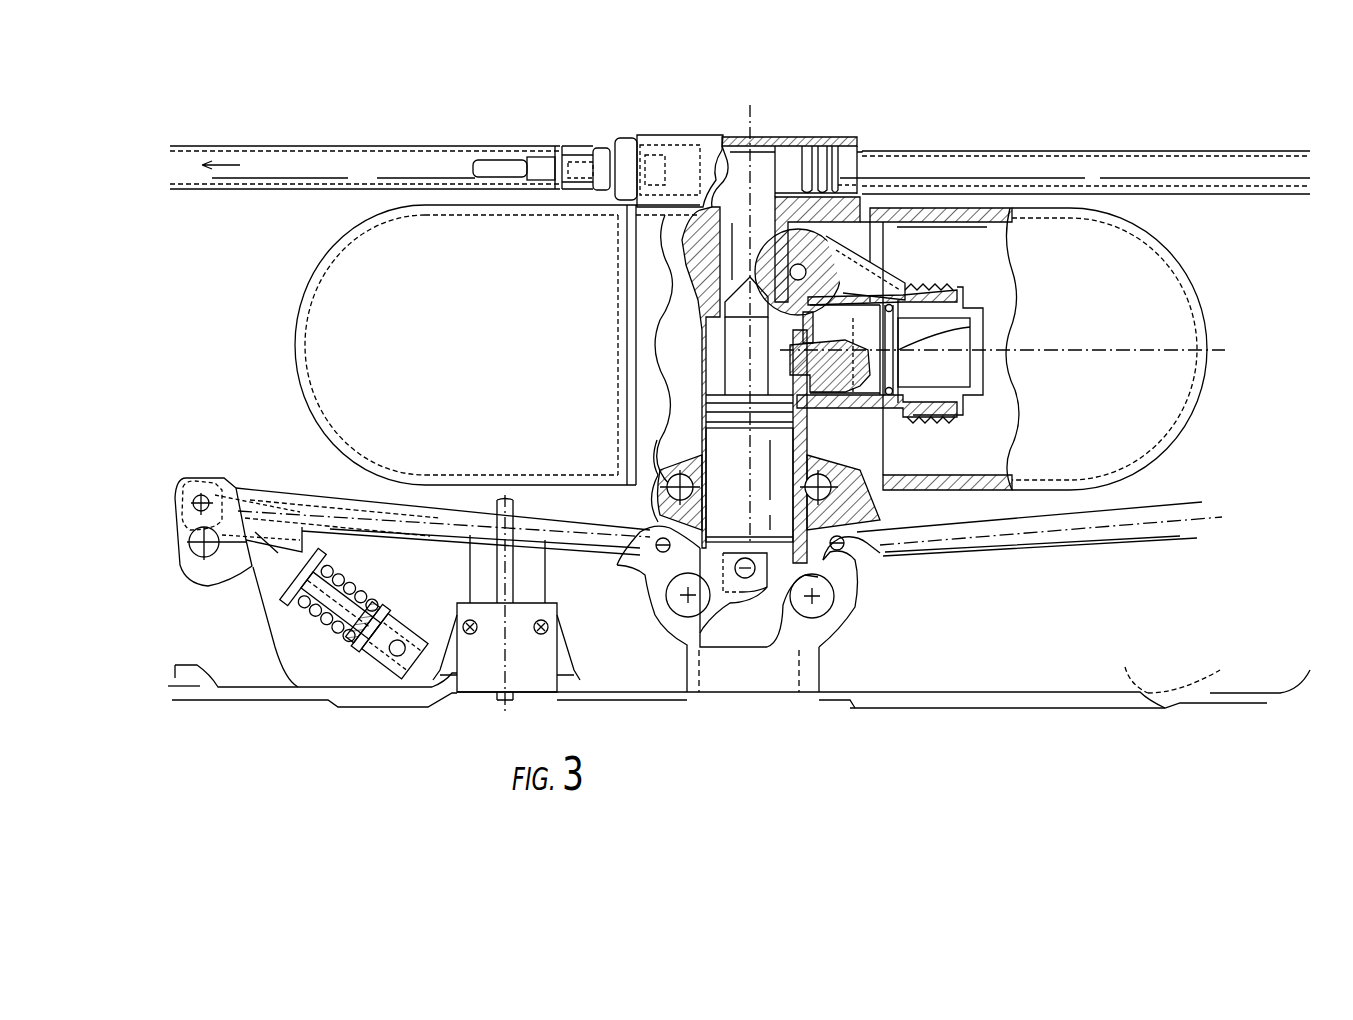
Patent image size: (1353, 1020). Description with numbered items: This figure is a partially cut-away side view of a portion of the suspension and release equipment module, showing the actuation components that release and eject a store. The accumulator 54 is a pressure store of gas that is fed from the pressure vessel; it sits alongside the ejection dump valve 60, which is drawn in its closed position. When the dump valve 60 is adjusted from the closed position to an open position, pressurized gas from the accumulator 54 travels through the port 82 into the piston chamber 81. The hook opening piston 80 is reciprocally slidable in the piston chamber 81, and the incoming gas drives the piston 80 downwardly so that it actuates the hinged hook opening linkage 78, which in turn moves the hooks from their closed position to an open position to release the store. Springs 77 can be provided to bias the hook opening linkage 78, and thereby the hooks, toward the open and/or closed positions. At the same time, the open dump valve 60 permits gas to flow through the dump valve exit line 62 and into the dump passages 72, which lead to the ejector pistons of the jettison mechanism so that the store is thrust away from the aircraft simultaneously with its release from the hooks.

The accumulator 54 is at (345, 330).
The ejection dump valve 60 is at (905, 325).
The dump valve exit line 62 is at (758, 205).
The dump passages 72 is at (432, 163).
The springs 77 is at (332, 605).
The hook opening linkage 78 is at (333, 498).
The hook opening piston 80 is at (766, 535).
The piston chamber 81 is at (720, 370).
The port 82 is at (865, 395).